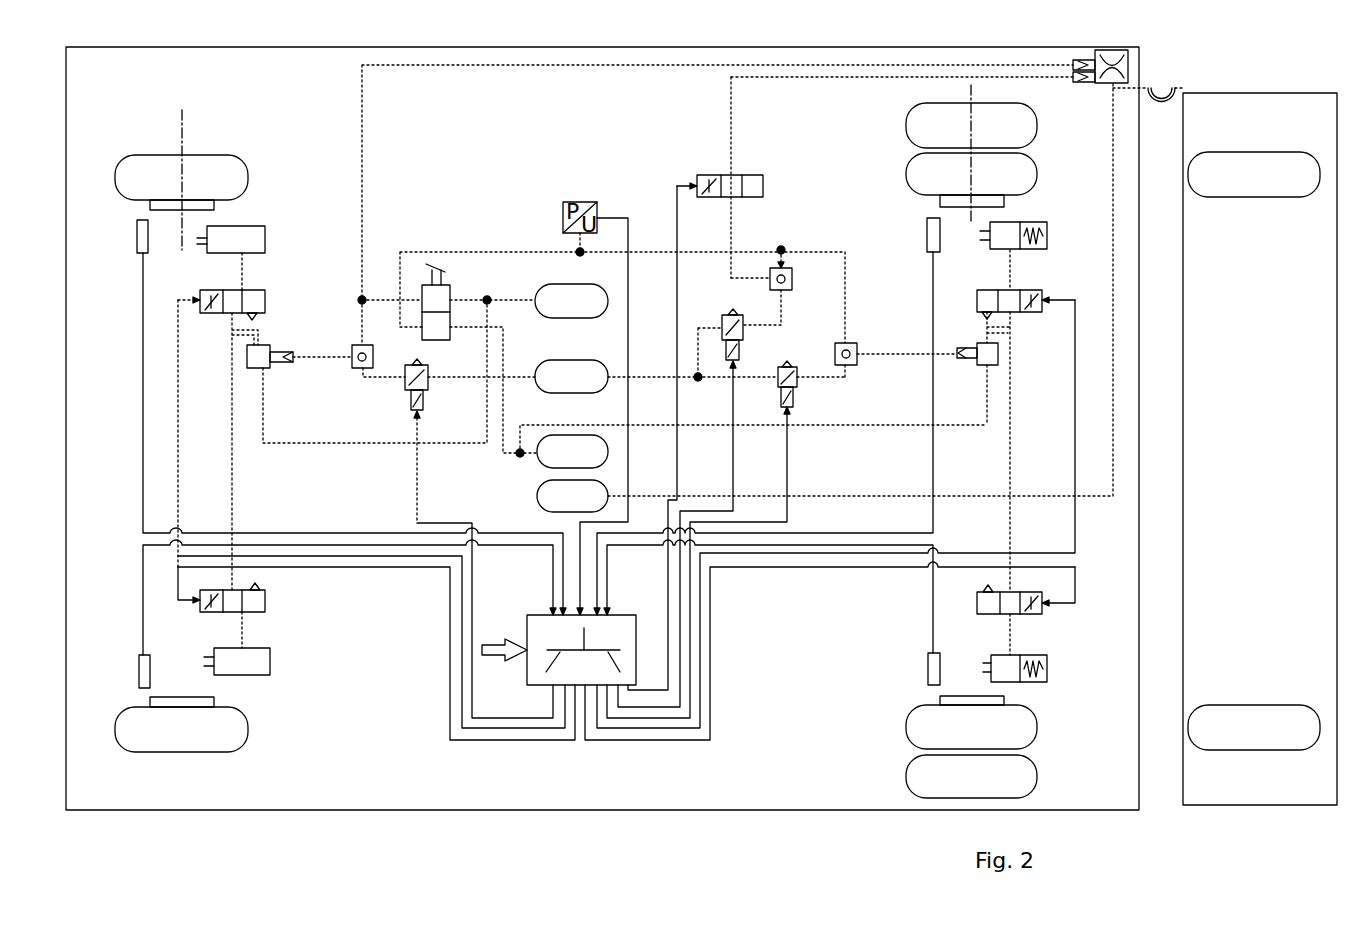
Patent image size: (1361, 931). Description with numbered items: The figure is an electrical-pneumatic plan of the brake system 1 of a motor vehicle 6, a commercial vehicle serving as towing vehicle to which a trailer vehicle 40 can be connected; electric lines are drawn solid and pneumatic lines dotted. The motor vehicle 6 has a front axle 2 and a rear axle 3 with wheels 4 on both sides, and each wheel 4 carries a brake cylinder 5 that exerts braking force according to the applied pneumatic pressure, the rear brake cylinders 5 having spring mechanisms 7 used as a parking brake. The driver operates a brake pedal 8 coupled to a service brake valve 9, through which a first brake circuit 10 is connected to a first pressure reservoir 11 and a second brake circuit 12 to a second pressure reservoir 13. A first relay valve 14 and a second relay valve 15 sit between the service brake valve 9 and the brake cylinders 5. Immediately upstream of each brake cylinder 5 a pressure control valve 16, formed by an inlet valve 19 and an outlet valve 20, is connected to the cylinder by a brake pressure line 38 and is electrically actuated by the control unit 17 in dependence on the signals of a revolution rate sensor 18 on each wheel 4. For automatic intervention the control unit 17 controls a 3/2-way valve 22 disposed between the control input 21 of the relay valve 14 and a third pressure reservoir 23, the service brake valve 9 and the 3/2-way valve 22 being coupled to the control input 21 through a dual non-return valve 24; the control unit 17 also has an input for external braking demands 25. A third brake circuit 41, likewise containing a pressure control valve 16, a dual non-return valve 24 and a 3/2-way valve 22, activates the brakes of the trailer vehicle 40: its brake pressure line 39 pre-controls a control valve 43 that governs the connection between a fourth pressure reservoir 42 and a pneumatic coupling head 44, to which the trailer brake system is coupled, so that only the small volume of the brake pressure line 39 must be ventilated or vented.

The brake system 1 is at (432, 672).
The front axle 2 is at (208, 175).
The rear axle 3 is at (941, 153).
The wheel 4 is at (717, 450).
The brake cylinder 5 is at (632, 437).
The motor vehicle 6 is at (602, 428).
The spring mechanism 7 is at (1061, 464).
The brake pedal 8 is at (447, 265).
The service brake valve 9 is at (395, 239).
The first brake circuit 10 is at (715, 205).
The first pressure reservoir 11 is at (605, 293).
The second brake circuit 12 is at (622, 286).
The second pressure reservoir 13 is at (718, 397).
The first relay valve 14 is at (367, 371).
The second relay valve 15 is at (956, 368).
The pressure control valve 16 is at (645, 408).
The control unit 17 is at (605, 451).
The revolution rate sensor 18 is at (508, 461).
The inlet valve 19 is at (482, 419).
The outlet valve 20 is at (543, 376).
The control input 21 is at (308, 378).
The 3/2-way valve 22 is at (601, 500).
The third pressure reservoir 23 is at (636, 366).
The dual non-return valve 24 is at (636, 334).
The external braking demand 25 is at (503, 626).
The brake pressure line 38 is at (283, 255).
The brake pressure line 39 is at (867, 107).
The trailer vehicle 40 is at (1260, 449).
The third brake circuit 41 is at (789, 305).
The fourth pressure reservoir 42 is at (825, 297).
The control valve 43 is at (1132, 54).
The pneumatic coupling head 44 is at (1178, 76).